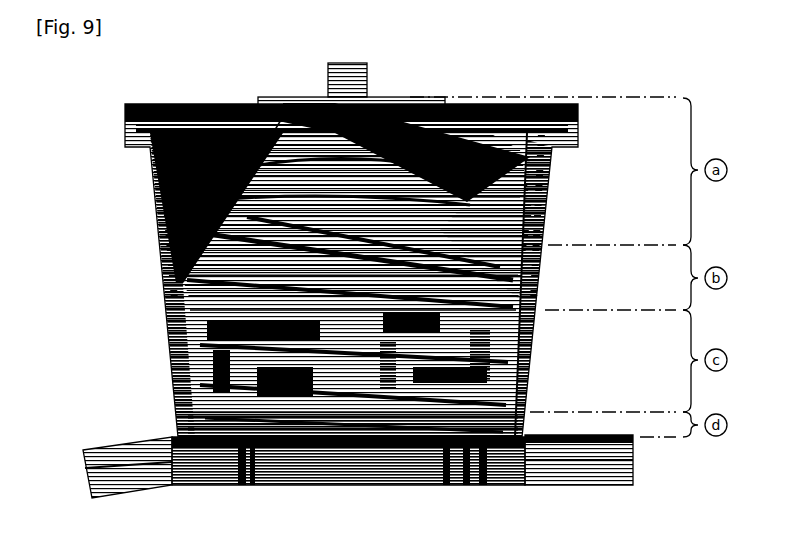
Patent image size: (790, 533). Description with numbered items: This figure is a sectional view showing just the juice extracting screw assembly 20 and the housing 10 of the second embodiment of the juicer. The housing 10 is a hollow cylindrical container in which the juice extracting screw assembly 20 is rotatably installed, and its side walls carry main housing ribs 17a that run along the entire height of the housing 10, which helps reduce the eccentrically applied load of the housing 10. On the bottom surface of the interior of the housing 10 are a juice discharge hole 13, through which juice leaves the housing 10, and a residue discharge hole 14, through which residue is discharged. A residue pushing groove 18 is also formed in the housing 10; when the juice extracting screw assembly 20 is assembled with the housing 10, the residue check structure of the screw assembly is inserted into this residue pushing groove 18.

The housing 10 is at (567, 134).
The juice discharge hole 13 is at (240, 452).
The residue discharge hole 14 is at (480, 445).
The main housing ribs 17a is at (162, 178).
The residue pushing groove 18 is at (335, 440).
The juice extracting screw assembly 20 is at (388, 103).